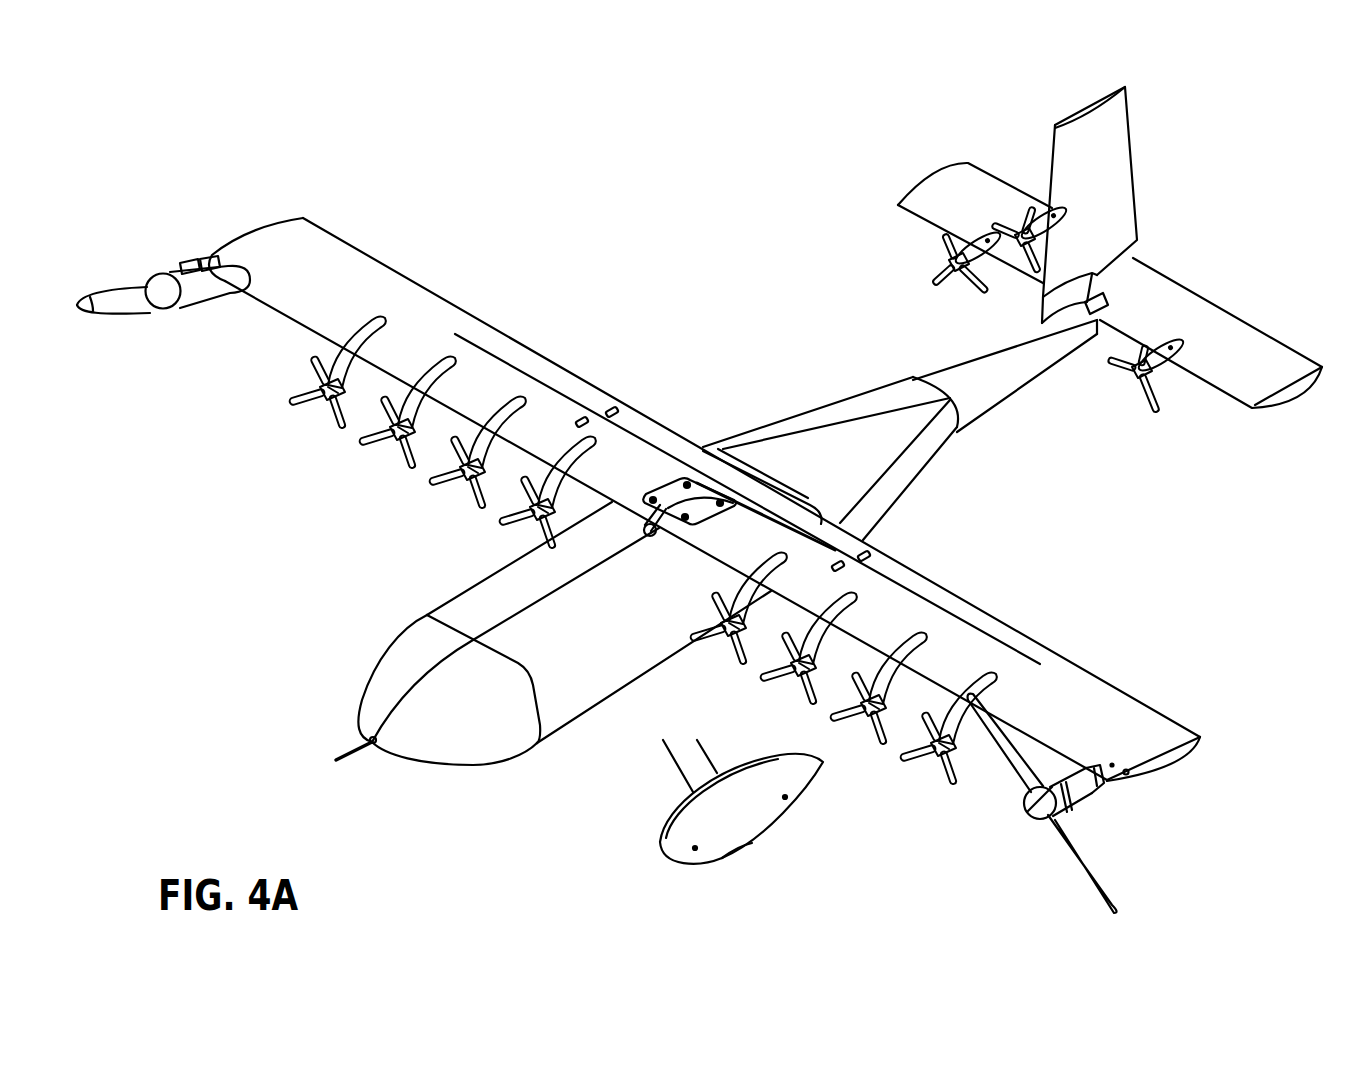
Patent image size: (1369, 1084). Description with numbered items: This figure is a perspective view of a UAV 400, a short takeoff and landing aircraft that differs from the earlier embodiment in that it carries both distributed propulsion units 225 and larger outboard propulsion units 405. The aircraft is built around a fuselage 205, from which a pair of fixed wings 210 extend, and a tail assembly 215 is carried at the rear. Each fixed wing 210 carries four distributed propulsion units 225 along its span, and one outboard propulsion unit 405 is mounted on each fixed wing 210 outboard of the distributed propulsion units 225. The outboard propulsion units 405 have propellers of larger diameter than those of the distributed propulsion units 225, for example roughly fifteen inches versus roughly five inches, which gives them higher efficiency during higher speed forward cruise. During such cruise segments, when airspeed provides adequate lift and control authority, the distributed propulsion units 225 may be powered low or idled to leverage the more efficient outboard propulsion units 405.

The UAV 400 is at (468, 124).
The fuselage 205 is at (789, 380).
The fixed wing 210 is at (1070, 540).
The tail assembly 215 is at (1208, 197).
The distributed propulsion units 225 is at (337, 503).
The outboard propulsion unit 405 is at (1185, 791).